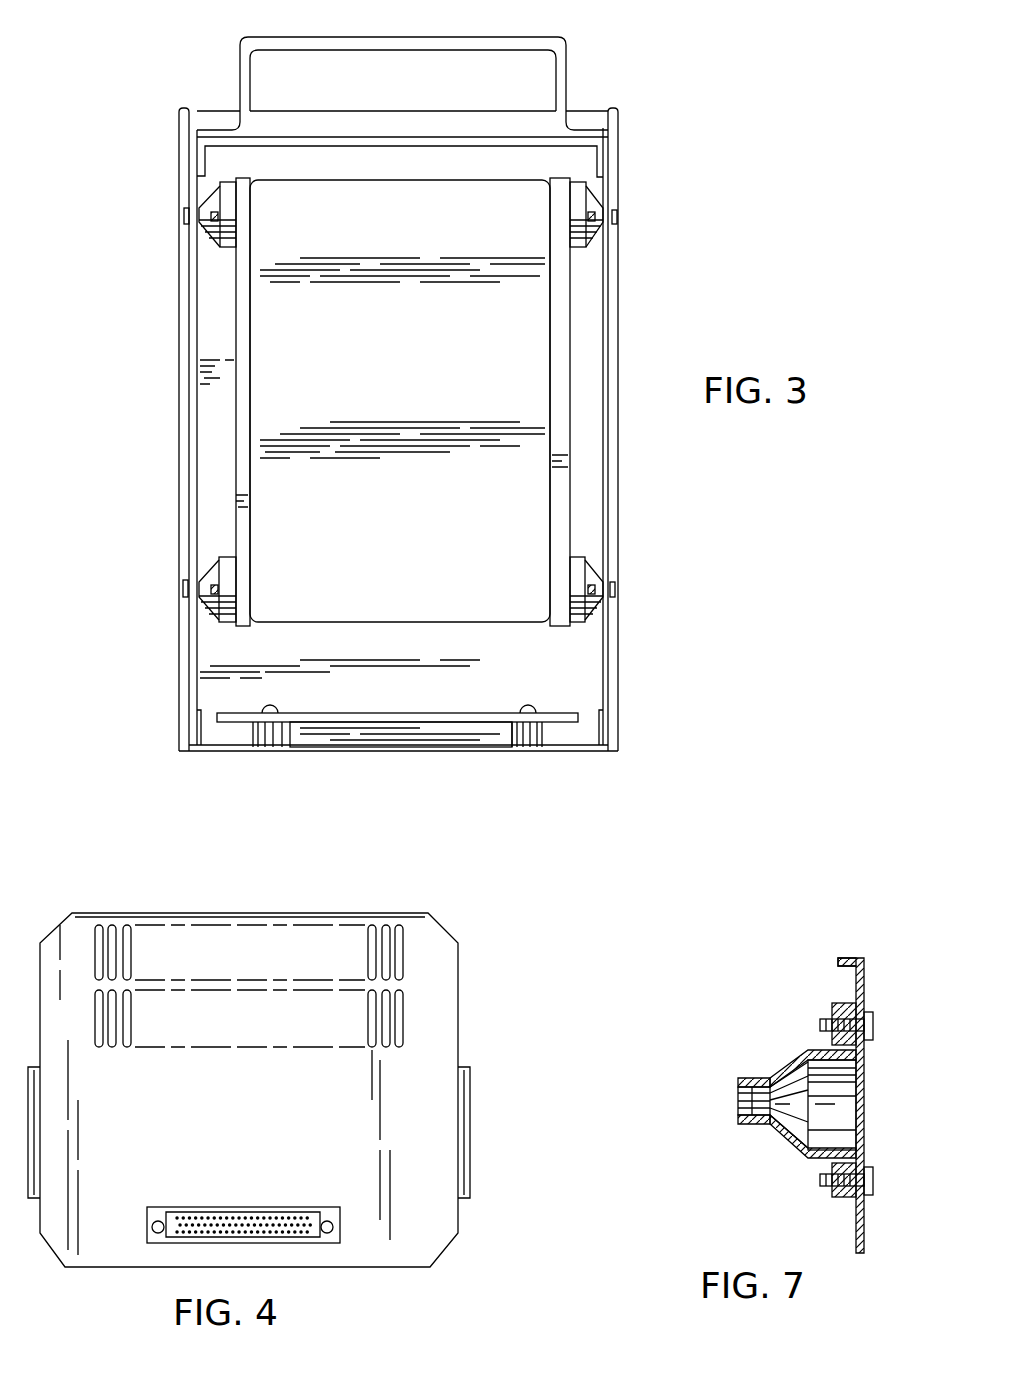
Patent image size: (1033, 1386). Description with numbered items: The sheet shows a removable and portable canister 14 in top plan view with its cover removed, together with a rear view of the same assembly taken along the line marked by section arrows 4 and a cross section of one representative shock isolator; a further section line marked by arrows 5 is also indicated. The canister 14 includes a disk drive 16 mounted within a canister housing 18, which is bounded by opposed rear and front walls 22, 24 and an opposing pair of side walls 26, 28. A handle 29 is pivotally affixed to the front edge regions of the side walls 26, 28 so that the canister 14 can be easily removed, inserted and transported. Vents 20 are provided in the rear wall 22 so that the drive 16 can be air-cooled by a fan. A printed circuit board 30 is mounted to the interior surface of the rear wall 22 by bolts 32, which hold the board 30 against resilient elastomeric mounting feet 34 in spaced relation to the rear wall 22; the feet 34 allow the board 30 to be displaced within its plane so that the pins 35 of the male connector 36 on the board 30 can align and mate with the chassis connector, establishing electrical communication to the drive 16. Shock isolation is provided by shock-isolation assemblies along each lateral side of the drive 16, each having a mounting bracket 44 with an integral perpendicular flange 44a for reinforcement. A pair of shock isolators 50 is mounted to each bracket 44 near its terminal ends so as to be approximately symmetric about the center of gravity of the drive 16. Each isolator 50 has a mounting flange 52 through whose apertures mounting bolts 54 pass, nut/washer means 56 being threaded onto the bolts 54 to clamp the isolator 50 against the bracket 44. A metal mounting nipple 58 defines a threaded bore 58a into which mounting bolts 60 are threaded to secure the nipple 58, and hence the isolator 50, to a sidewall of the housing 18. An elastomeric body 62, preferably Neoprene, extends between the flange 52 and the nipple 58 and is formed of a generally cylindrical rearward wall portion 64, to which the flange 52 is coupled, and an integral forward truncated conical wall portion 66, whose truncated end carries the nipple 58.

In FIG. 3, the section line 4— 4 is at (150, 760).
In FIG. 3, the section line 5— 5 is at (197, 5).
In FIG. 3, the canister 14 is at (418, 396).
In FIG. 3, the disk drive 16 is at (404, 358).
In FIG. 3, the canister housing 18 is at (391, 434).
In FIG. 4, the vents 20 is at (400, 968).
In FIG. 3, the rear wall 22 is at (455, 752).
In FIG. 4, the rear wall 22 is at (250, 1130).
In FIG. 3, the front wall 24 is at (427, 130).
In FIG. 3, the side wall 26 is at (190, 478).
In FIG. 3, the side wall 28 is at (610, 436).
In FIG. 3, the handle 29 is at (545, 40).
In FIG. 3, the printed circuit board 30 is at (462, 713).
In FIG. 3, the bolts 32 is at (272, 708).
In FIG. 3, the mounting feet 34 is at (258, 740).
In FIG. 4, the pins 35 is at (236, 1230).
In FIG. 3, the male connector 36 is at (405, 730).
In FIG. 4, the male connector 36 is at (243, 1202).
In FIG. 7, the mounting bracket 44 is at (873, 1088).
In FIG. 3, the perpendicular flange 44a is at (213, 405).
In FIG. 7, the perpendicular flange 44a is at (846, 960).
In FIG. 3, the shock-isolator 50 is at (212, 196).
In FIG. 7, the shock-isolator 50 is at (798, 1103).
In FIG. 7, the mounting flange 52 is at (862, 1170).
In FIG. 7, the mounting bolts 54 is at (874, 1026).
In FIG. 7, the nut/washer means 56 is at (843, 1008).
In FIG. 7, the mounting nipple 58 is at (742, 1122).
In FIG. 7, the threaded bore 58a is at (742, 1100).
In FIG. 3, the mounting bolts 60 is at (184, 218).
In FIG. 7, the elastomeric body 62 is at (800, 1074).
In FIG. 7, the cylindrical wall portion 64 is at (822, 1048).
In FIG. 7, the conical wall portion 66 is at (790, 1140).